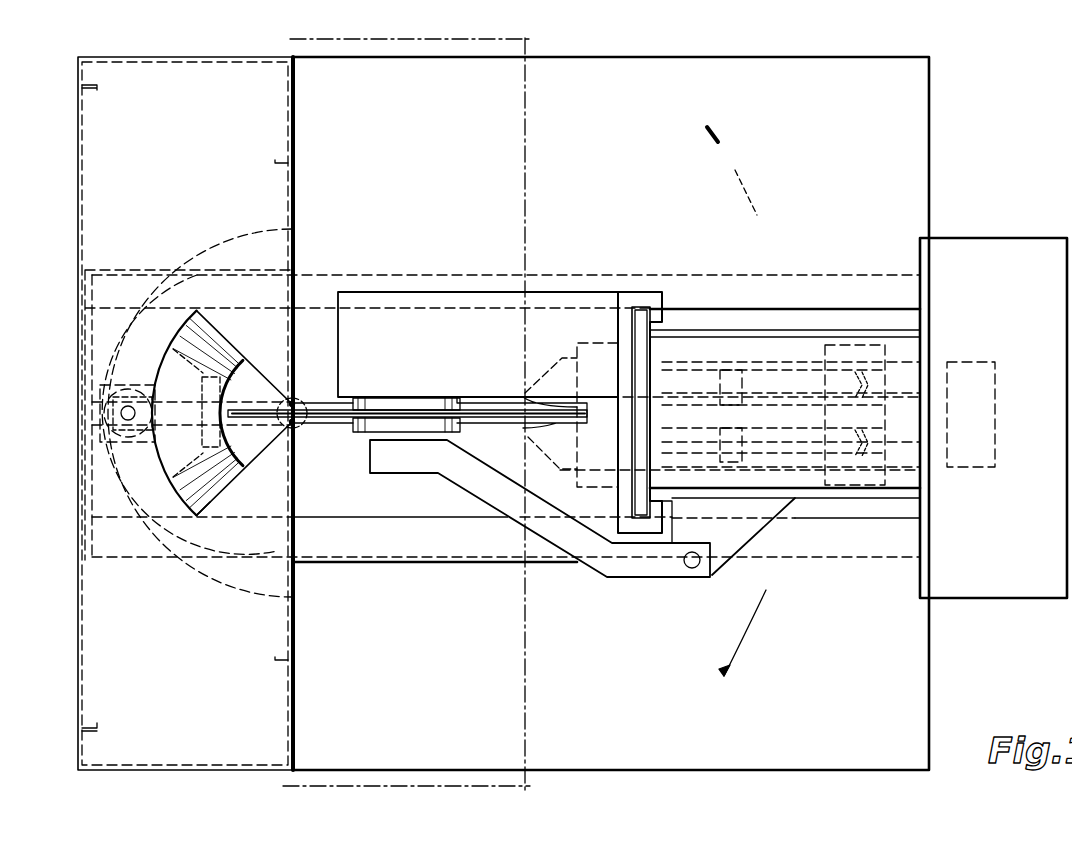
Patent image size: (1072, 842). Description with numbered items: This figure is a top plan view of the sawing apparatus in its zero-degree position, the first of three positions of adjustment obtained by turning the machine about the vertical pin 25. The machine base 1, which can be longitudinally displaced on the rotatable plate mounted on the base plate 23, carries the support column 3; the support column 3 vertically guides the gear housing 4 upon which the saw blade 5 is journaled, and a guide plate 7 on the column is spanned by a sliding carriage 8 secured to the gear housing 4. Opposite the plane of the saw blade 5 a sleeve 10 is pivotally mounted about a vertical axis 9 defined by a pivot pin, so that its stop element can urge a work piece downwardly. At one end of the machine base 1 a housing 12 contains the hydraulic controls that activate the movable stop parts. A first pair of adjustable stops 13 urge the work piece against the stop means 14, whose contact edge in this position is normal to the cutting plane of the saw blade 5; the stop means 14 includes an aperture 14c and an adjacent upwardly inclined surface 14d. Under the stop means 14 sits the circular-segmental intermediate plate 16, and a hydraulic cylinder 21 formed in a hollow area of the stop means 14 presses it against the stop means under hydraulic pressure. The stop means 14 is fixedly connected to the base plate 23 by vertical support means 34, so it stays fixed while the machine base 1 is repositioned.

The machine base 1 is at (372, 505).
The support column 3 is at (775, 335).
The gear housing 4 is at (372, 305).
The saw blade 5 is at (326, 418).
The guide plate 7 is at (645, 310).
The sliding carriage 8 is at (626, 335).
The vertical axis 9 is at (690, 568).
The sleeve 10 is at (417, 466).
The housing 12 is at (990, 252).
The adjustable stops 13 is at (535, 440).
The stop means 14 is at (88, 205).
The aperture 14c is at (248, 448).
The upwardly inclined surface 14d is at (197, 517).
The intermediate plate 16 is at (130, 362).
The hydraulic cylinder 21 is at (113, 403).
The base plate 23 is at (918, 670).
The vertical pin 25 is at (293, 402).
The vertical support means 34 is at (165, 62).